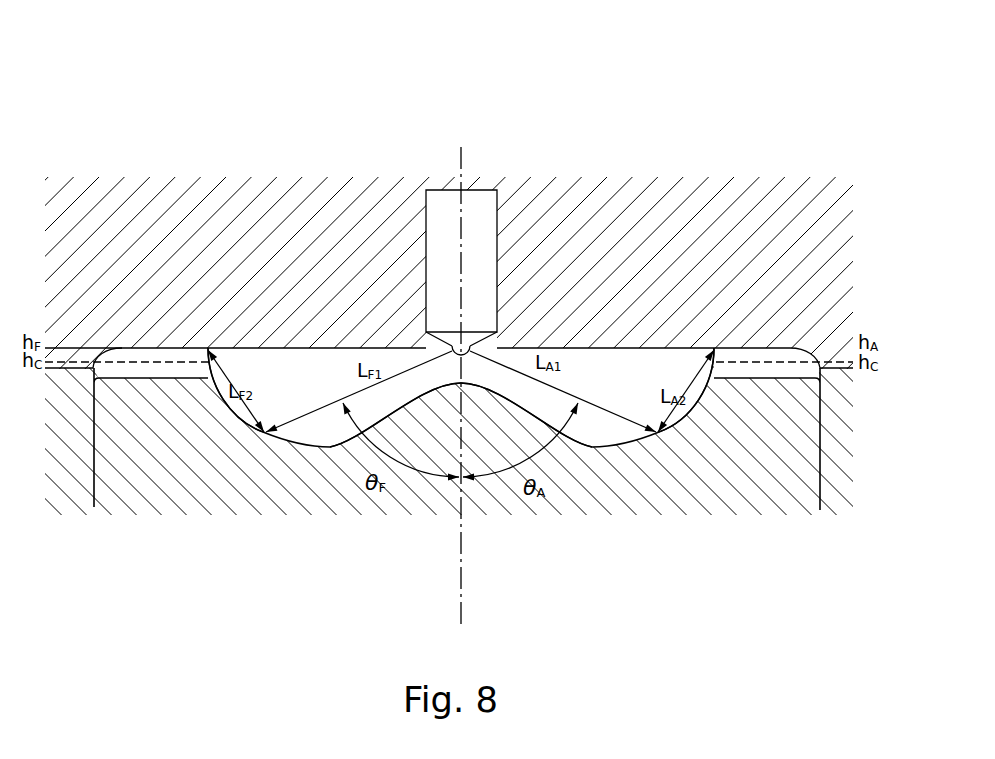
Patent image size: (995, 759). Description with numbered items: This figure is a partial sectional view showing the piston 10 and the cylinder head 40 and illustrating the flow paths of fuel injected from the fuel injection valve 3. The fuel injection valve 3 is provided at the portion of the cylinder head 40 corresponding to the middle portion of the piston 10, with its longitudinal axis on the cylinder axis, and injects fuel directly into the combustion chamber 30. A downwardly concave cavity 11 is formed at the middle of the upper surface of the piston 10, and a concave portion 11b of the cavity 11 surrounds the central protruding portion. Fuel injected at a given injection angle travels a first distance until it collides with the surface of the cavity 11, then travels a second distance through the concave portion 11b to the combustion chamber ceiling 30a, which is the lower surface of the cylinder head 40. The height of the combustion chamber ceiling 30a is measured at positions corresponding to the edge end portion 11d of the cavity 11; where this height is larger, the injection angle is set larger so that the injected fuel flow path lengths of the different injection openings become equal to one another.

The fuel injection valve 3 is at (478, 190).
The piston 10 is at (233, 517).
The cavity 11 is at (297, 443).
The concave portion 11b is at (600, 445).
The edge end portion 11d is at (208, 348).
The combustion chamber 30 is at (321, 393).
The combustion chamber ceiling 30a is at (300, 350).
The cylinder head 40 is at (617, 162).